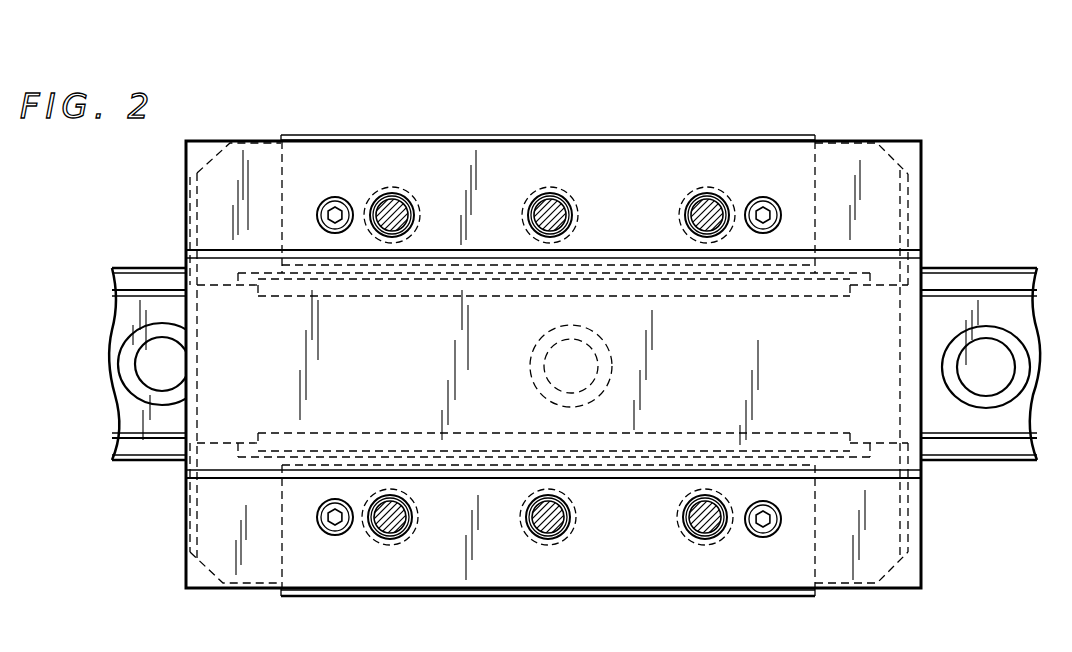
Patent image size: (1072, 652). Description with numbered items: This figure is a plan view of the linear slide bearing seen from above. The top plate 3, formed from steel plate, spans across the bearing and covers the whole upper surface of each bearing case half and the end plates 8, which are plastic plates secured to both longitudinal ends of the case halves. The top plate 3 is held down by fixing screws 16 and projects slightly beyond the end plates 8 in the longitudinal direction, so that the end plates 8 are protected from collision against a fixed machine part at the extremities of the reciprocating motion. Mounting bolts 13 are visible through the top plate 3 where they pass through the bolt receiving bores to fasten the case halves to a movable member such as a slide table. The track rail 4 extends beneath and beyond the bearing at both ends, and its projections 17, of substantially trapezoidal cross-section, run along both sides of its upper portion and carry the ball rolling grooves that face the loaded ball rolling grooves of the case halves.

The top plate 3 is at (628, 590).
The track rail 4 is at (953, 462).
The end plate 8 is at (233, 157).
The mounting bolt 13 is at (392, 192).
The fixing screw 16 is at (335, 196).
The projection 17 is at (978, 288).